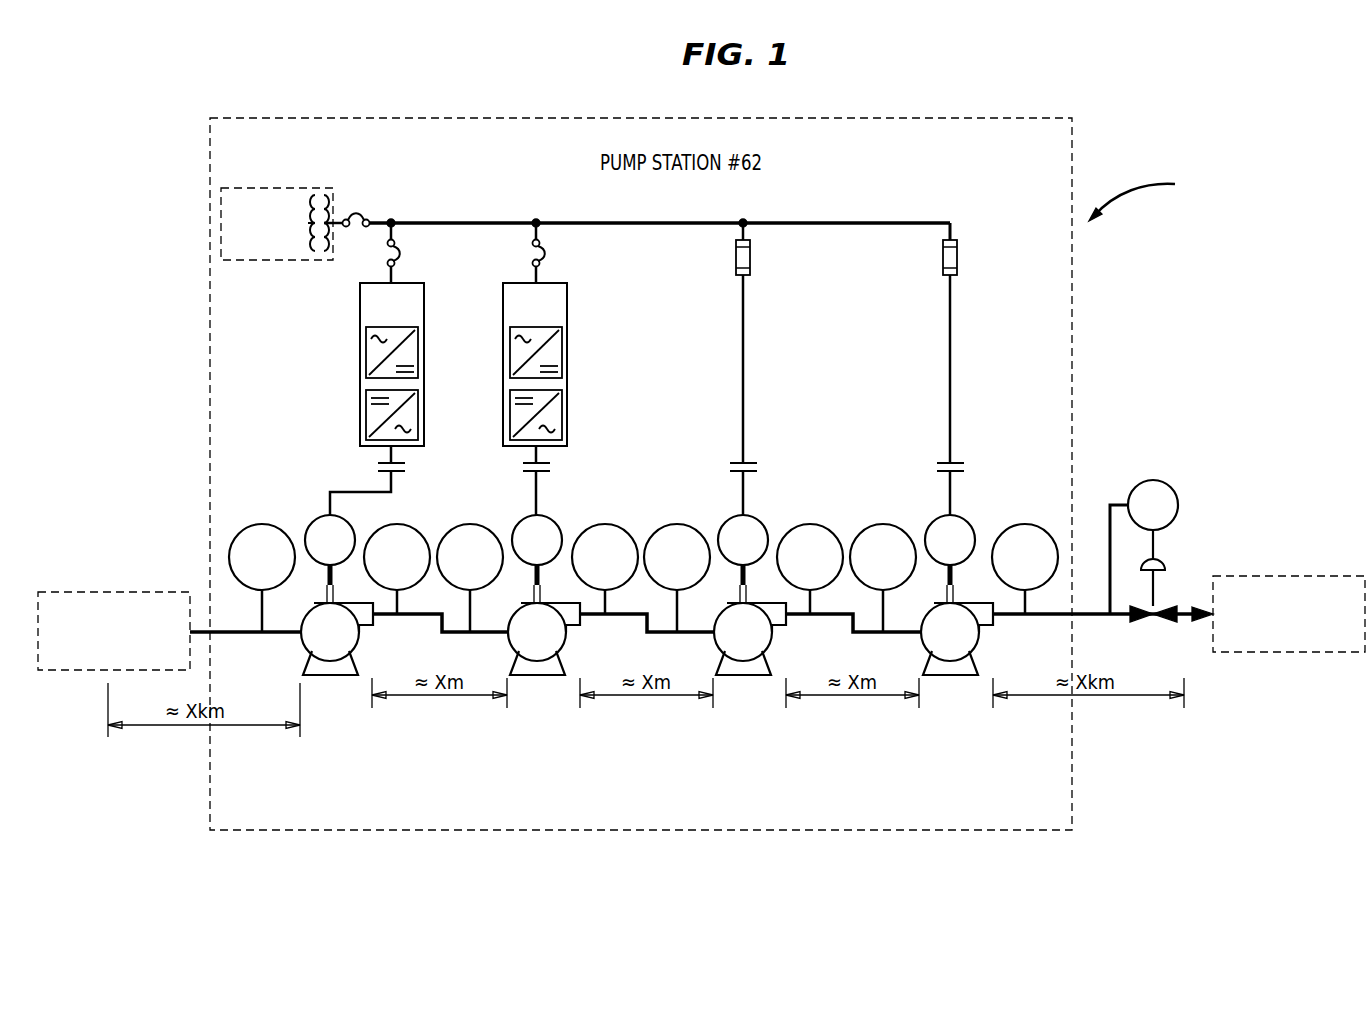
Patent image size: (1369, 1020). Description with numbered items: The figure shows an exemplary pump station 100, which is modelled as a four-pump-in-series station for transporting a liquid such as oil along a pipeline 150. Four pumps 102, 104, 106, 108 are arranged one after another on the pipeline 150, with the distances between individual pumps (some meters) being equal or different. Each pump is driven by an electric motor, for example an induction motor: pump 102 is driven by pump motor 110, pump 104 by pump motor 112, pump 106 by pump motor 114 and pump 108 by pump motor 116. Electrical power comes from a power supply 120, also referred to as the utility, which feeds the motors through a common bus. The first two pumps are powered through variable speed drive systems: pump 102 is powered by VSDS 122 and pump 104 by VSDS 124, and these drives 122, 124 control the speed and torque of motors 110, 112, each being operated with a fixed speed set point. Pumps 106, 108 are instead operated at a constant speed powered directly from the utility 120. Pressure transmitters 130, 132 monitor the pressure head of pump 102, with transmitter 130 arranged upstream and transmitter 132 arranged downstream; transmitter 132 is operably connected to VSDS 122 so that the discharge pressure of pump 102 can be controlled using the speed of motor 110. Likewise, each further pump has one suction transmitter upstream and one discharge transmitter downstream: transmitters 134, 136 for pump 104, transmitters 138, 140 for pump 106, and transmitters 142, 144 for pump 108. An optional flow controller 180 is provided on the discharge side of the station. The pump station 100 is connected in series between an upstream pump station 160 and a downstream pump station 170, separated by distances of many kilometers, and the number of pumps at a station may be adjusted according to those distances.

The pump station 100 is at (1152, 196).
The pump 102 is at (328, 661).
The pump 104 is at (535, 661).
The pump 106 is at (741, 661).
The pump 108 is at (948, 661).
The pump motor 110 is at (316, 519).
The pump motor 112 is at (550, 519).
The pump motor 114 is at (757, 519).
The pump motor 116 is at (964, 519).
The power supply 120 is at (272, 262).
The variable speed drive system 122 is at (360, 370).
The variable speed drive system 124 is at (567, 368).
The pressure transmitter 130 is at (256, 525).
The pressure transmitter 132 is at (412, 526).
The pressure transmitter 134 is at (468, 525).
The pressure transmitter 136 is at (605, 525).
The pressure transmitter 138 is at (673, 525).
The pressure transmitter 140 is at (807, 525).
The pressure transmitter 142 is at (880, 525).
The pressure transmitter 144 is at (1022, 525).
The pipeline 150 is at (227, 634).
The pump station 160 is at (118, 592).
The pump station 170 is at (1295, 576).
The flow controller 180 is at (1152, 481).